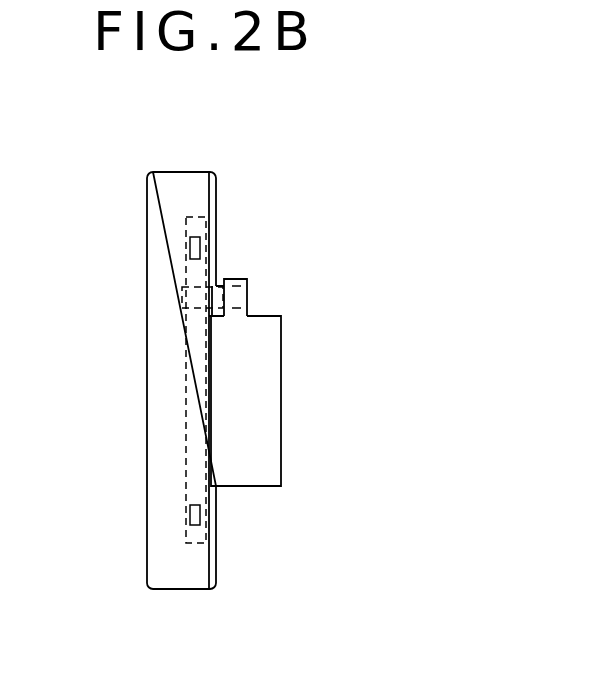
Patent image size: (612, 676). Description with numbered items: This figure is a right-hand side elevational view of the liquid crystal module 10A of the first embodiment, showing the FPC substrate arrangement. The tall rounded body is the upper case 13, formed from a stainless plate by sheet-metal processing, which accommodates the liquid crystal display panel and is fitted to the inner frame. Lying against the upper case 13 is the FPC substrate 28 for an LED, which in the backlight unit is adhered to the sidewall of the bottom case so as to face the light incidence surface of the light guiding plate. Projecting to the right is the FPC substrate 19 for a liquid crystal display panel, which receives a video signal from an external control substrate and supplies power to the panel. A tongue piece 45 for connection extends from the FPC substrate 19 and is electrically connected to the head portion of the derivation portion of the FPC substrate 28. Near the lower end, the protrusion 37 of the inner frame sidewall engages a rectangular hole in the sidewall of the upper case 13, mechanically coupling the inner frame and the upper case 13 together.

The liquid crystal module 10A is at (210, 143).
The upper case 13 is at (193, 192).
The FPC substrate for an LED 28 is at (198, 229).
The tongue piece for connection 45 is at (243, 299).
The FPC substrate for a liquid crystal display panel 19 is at (255, 388).
The protrusion 37 is at (193, 512).